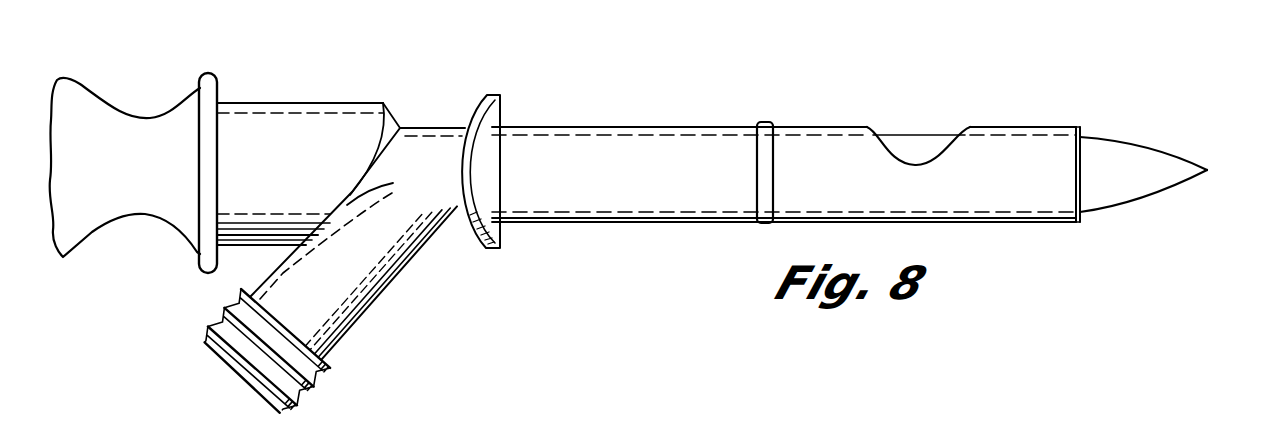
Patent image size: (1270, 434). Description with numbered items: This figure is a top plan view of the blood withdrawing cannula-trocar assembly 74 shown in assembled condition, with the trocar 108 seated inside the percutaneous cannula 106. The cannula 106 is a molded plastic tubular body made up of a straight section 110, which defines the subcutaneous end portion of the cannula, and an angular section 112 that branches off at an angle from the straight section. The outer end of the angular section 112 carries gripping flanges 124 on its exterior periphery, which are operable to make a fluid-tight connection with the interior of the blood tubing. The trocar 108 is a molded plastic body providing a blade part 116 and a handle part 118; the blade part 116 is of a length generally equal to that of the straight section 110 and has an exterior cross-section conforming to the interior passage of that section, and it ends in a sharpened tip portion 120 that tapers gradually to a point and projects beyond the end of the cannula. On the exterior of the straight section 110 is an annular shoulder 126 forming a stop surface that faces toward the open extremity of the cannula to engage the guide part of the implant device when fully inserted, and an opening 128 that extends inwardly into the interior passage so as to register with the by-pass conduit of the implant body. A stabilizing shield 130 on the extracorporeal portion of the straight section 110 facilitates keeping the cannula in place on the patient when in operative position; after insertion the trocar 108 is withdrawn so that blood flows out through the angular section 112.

The cannula-trocar assembly 74 is at (676, 106).
The percutaneous cannula 106 is at (1045, 121).
The trocar 108 is at (1164, 148).
The straight section 110 is at (660, 198).
The angular section 112 is at (372, 302).
The blade part 116 is at (930, 131).
The handle part 118 is at (88, 222).
The sharpened tip portion 120 is at (1160, 190).
The gripping flanges 124 is at (328, 408).
The annular shoulder 126 is at (770, 224).
The opening 128 is at (892, 137).
The stabilizing shield 130 is at (492, 116).